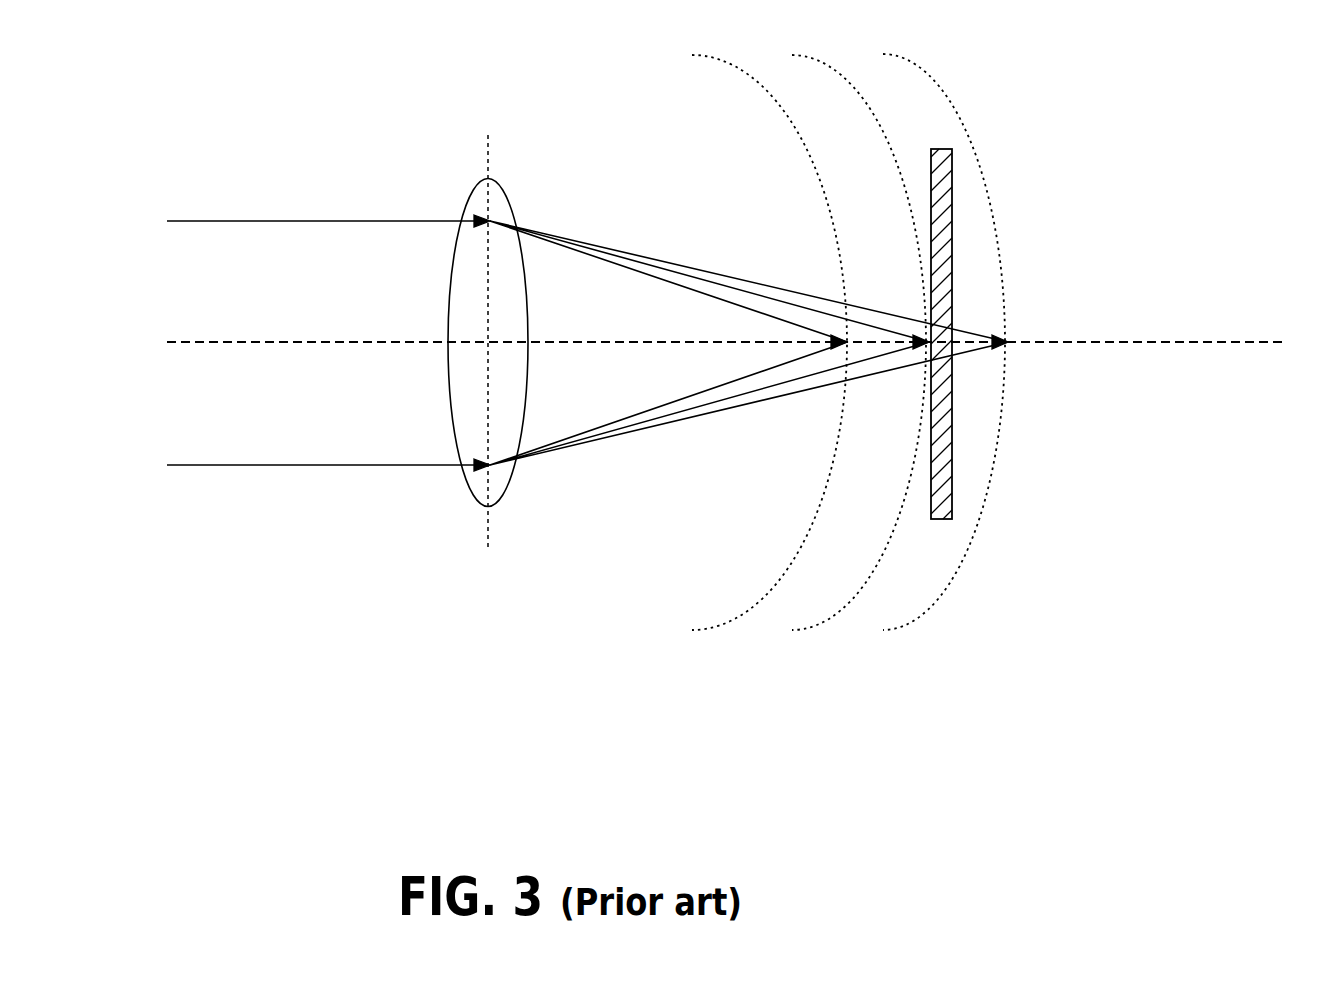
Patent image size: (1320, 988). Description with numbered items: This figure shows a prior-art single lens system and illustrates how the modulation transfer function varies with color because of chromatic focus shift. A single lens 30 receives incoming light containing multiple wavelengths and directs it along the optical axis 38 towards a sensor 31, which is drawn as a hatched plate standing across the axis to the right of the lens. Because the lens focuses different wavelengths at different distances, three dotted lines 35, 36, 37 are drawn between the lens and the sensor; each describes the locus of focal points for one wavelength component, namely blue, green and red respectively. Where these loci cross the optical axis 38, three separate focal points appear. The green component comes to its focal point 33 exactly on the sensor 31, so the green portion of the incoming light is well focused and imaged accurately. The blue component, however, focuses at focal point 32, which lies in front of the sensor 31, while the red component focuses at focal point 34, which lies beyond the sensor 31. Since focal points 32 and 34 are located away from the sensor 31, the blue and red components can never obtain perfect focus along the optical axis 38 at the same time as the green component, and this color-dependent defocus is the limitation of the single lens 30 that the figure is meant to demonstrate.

The single lens 30 is at (510, 184).
The sensor 31 is at (952, 197).
The focal point of blue light 32 is at (855, 350).
The focal point of green light 33 is at (957, 345).
The focal point of red light 34 is at (1007, 347).
The locus of focal points for blue light 35 is at (712, 58).
The locus of focal points for green light 36 is at (800, 57).
The locus of focal points for red light 37 is at (903, 57).
The optical axis 38 is at (222, 342).